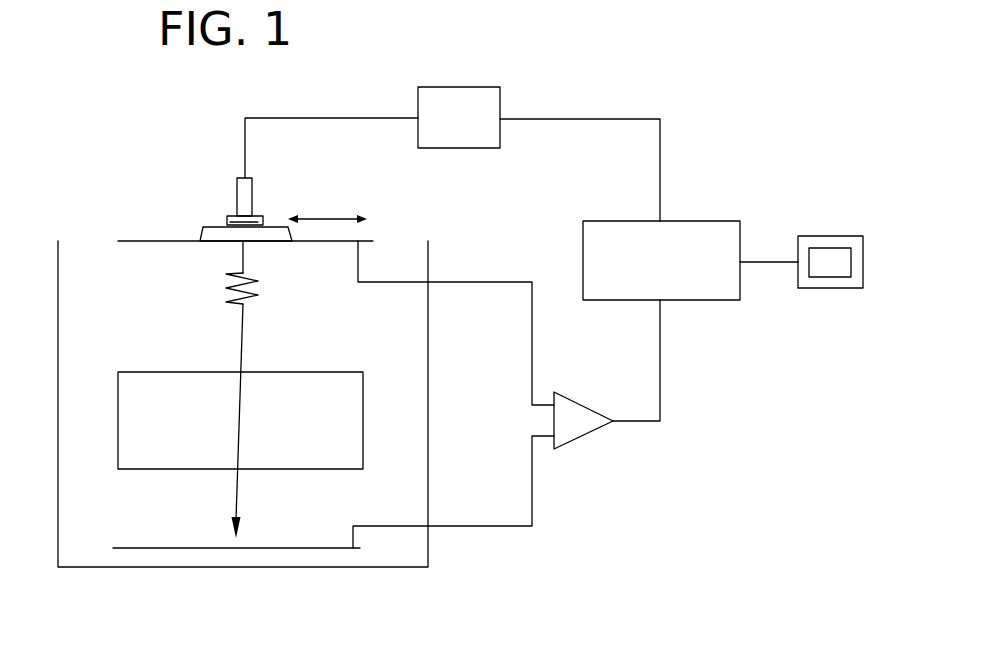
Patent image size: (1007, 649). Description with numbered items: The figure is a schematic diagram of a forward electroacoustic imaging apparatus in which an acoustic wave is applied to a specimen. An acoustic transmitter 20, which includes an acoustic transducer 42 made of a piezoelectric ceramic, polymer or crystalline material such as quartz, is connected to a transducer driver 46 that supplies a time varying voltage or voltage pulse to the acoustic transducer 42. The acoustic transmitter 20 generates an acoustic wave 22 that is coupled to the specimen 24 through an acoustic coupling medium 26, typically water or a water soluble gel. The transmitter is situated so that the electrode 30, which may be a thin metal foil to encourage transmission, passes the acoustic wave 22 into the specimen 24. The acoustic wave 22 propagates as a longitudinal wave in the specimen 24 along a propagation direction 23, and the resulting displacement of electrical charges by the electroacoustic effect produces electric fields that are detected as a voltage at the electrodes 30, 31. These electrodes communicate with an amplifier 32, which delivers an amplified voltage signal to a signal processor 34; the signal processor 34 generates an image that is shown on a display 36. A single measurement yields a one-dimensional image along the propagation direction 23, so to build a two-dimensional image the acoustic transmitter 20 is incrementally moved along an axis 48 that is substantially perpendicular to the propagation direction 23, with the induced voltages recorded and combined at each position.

The acoustic transmitter 20 is at (226, 205).
The acoustic transducer 42 is at (257, 216).
The acoustic coupling medium 26 is at (202, 238).
The electrode 30 is at (373, 241).
The axis 48 is at (327, 219).
The acoustic wave 22 is at (225, 291).
The propagation direction 23 is at (243, 337).
The specimen 24 is at (118, 428).
The electrode 31 is at (176, 548).
The amplifier 32 is at (577, 440).
The signal processor 34 is at (697, 222).
The display 36 is at (815, 236).
The transducer driver 46 is at (445, 87).